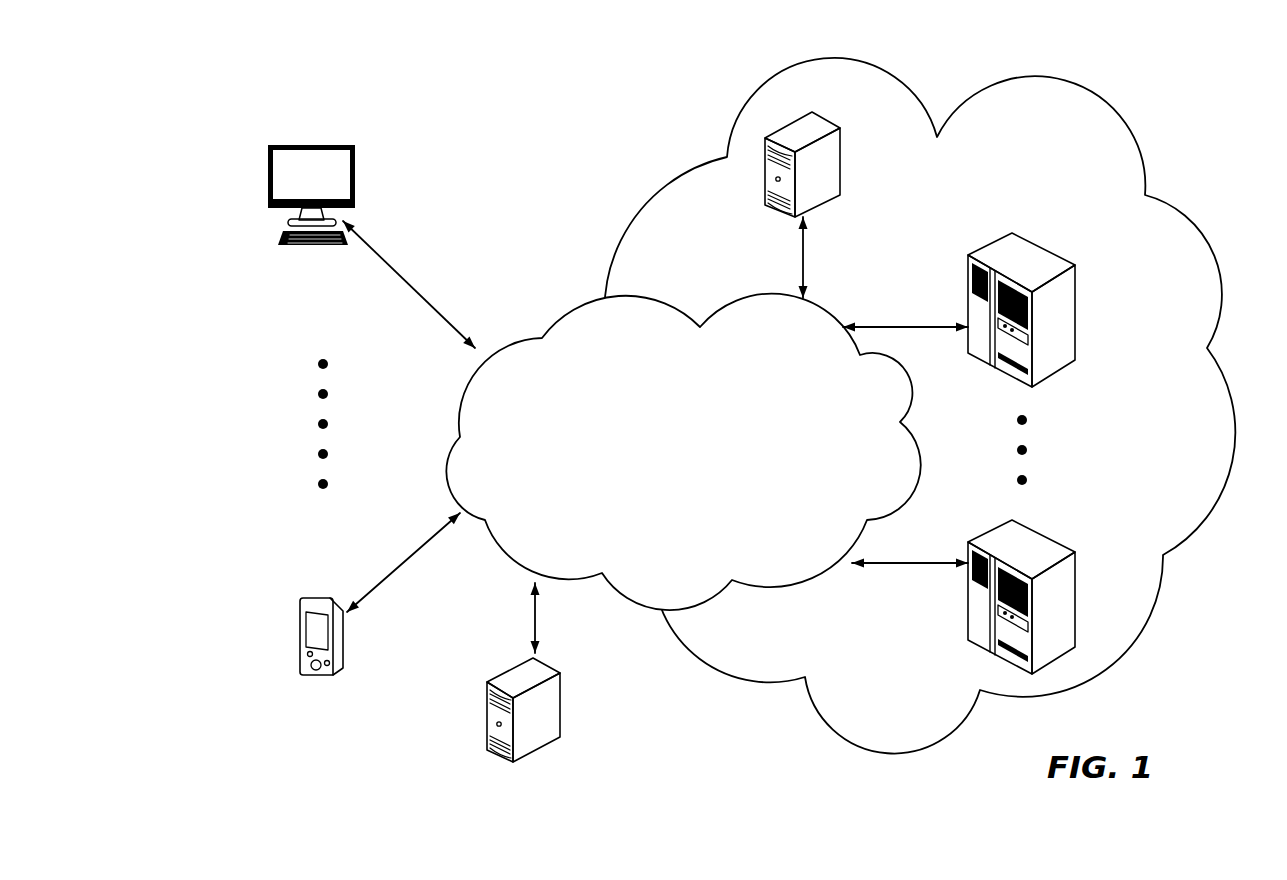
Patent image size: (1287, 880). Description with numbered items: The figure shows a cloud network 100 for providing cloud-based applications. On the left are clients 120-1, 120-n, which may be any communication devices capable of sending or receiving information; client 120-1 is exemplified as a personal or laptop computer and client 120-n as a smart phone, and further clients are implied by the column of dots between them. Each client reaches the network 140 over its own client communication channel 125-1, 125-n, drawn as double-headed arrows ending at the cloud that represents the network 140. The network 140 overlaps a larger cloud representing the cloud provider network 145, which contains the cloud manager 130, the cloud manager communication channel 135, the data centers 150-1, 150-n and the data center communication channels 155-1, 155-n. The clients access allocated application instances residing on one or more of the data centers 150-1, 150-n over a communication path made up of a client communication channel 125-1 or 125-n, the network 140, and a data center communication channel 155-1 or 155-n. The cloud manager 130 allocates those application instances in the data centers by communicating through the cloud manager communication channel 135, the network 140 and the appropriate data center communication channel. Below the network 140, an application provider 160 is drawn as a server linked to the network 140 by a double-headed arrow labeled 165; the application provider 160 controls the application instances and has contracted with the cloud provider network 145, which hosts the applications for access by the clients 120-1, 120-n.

The cloud network 100 is at (336, 88).
The client 120-1 is at (268, 176).
The client 120-n is at (299, 630).
The client communication channel 125-1 is at (414, 290).
The client communication channel 125-n is at (409, 560).
The cloud manager 130 is at (843, 161).
The cloud manager communication channel 135 is at (809, 259).
The network 140 is at (571, 311).
The cloud provider network 145 is at (738, 118).
The data center 150-1 is at (1079, 319).
The data center 150-n is at (1044, 537).
The data center communication channel 155-1 is at (905, 323).
The data center communication channel 155-n is at (906, 570).
The application provider 160 is at (565, 706).
The communication link 165 is at (541, 620).